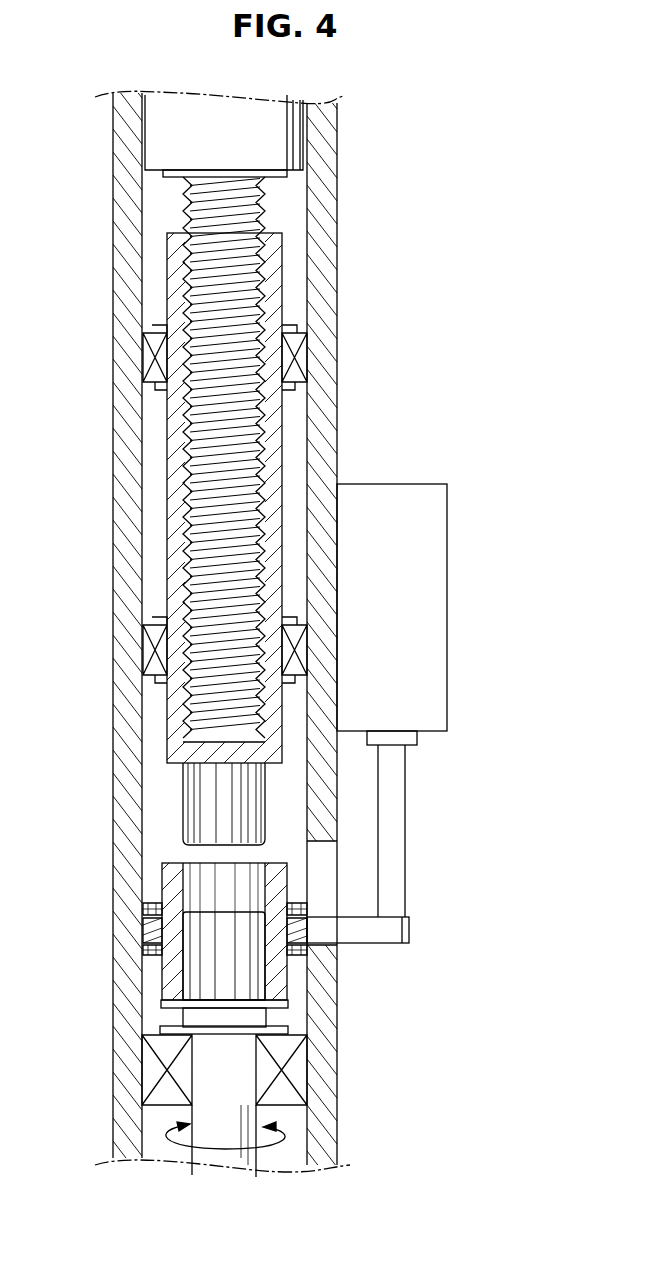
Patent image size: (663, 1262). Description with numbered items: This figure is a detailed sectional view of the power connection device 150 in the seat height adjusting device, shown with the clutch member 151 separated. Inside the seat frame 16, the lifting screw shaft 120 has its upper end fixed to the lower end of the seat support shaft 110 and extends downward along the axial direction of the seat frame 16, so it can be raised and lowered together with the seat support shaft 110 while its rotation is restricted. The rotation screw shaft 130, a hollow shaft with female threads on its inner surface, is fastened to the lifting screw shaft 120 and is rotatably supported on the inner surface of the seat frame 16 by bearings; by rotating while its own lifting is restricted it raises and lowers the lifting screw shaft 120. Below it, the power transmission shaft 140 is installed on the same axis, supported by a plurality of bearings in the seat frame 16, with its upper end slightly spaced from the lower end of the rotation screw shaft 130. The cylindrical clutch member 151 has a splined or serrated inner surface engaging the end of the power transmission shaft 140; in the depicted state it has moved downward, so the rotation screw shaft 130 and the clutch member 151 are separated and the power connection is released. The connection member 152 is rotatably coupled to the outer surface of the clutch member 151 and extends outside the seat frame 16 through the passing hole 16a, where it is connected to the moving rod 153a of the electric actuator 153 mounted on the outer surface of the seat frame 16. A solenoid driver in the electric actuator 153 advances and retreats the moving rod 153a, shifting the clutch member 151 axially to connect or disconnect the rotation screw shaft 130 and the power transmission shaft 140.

The seat frame 16 is at (122, 490).
The passing hole 16a is at (320, 945).
The seat support shaft 110 is at (275, 143).
The lifting screw shaft 120 is at (227, 302).
The rotation screw shaft 130 is at (272, 433).
The power transmission shaft 140 is at (233, 1123).
The power connection device 150 is at (416, 902).
The clutch member 151 is at (173, 973).
The connection member 152 is at (382, 933).
The electric actuator 153 is at (433, 613).
The moving rod 153a is at (396, 805).